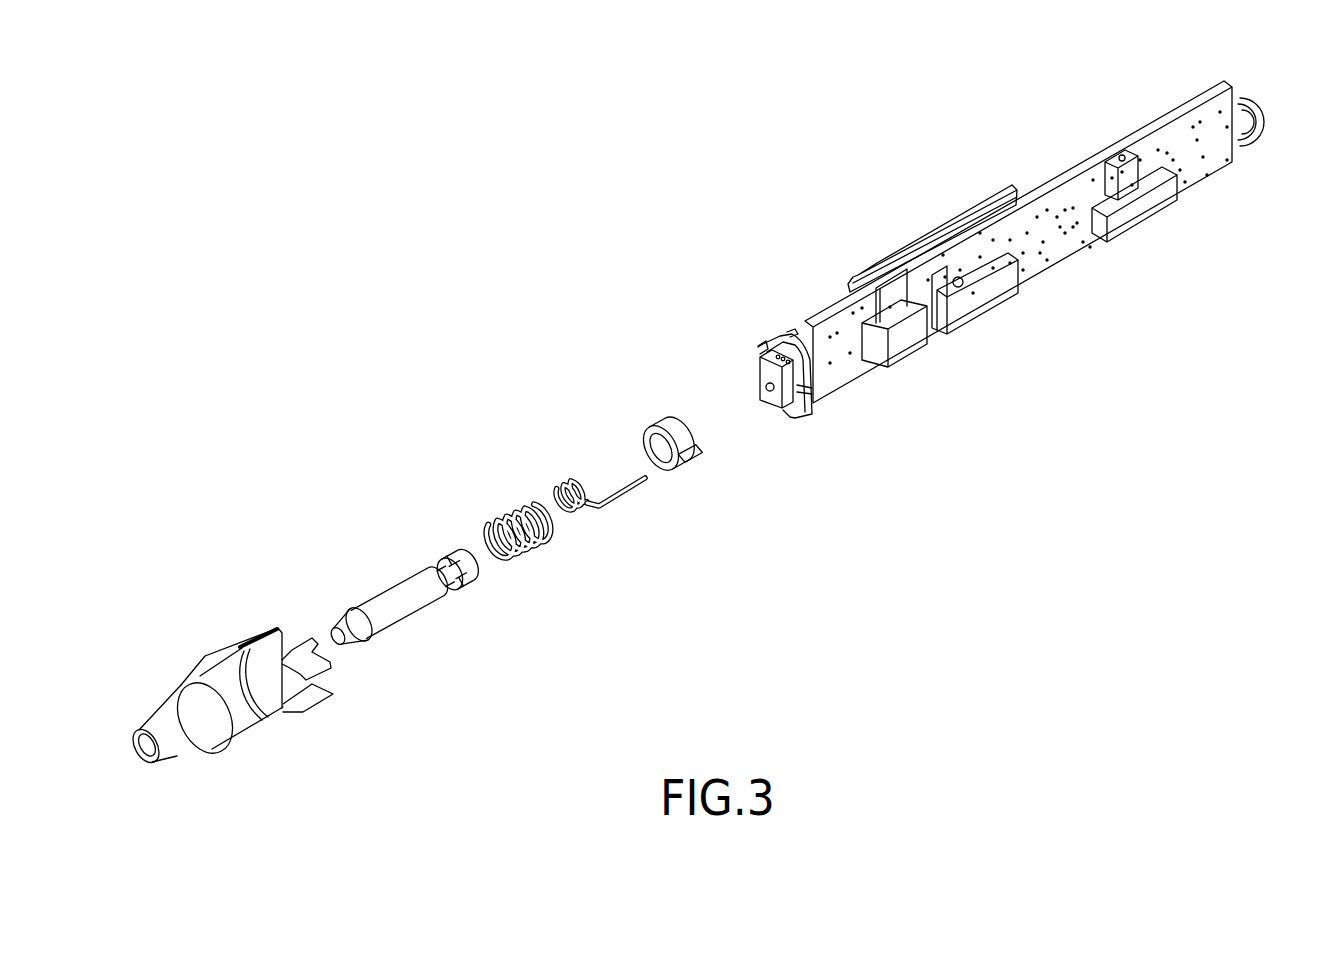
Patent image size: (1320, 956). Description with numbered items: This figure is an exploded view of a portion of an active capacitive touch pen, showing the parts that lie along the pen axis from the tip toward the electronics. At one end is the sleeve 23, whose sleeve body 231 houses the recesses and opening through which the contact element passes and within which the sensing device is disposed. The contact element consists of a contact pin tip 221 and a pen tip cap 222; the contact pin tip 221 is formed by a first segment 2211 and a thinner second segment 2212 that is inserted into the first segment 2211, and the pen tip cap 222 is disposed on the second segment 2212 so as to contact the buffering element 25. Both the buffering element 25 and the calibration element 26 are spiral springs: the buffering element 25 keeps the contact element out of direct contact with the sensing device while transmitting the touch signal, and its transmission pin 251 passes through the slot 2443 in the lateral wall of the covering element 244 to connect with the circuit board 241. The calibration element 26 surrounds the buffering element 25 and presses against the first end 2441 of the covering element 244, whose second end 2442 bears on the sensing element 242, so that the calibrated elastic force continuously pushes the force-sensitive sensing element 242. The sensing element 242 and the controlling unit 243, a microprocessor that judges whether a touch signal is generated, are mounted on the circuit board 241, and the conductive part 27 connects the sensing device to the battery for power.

The sleeve 23 is at (230, 701).
The sleeve body 231 is at (212, 679).
The contact pin tip 221 is at (422, 623).
The first segment 2211 is at (392, 603).
The second segment 2212 is at (460, 582).
The pen tip cap 222 is at (457, 552).
The calibration element 26 is at (502, 523).
The buffering element 25 is at (592, 499).
The transmission pin 251 is at (638, 487).
The covering element 244 is at (668, 442).
The first end 2441 is at (650, 458).
The second end 2442 is at (688, 425).
The slot 2443 is at (692, 457).
The sensing element 242 is at (768, 358).
The circuit board 241 is at (1018, 242).
The controlling unit 243 is at (907, 252).
The conductive part 27 is at (1247, 122).